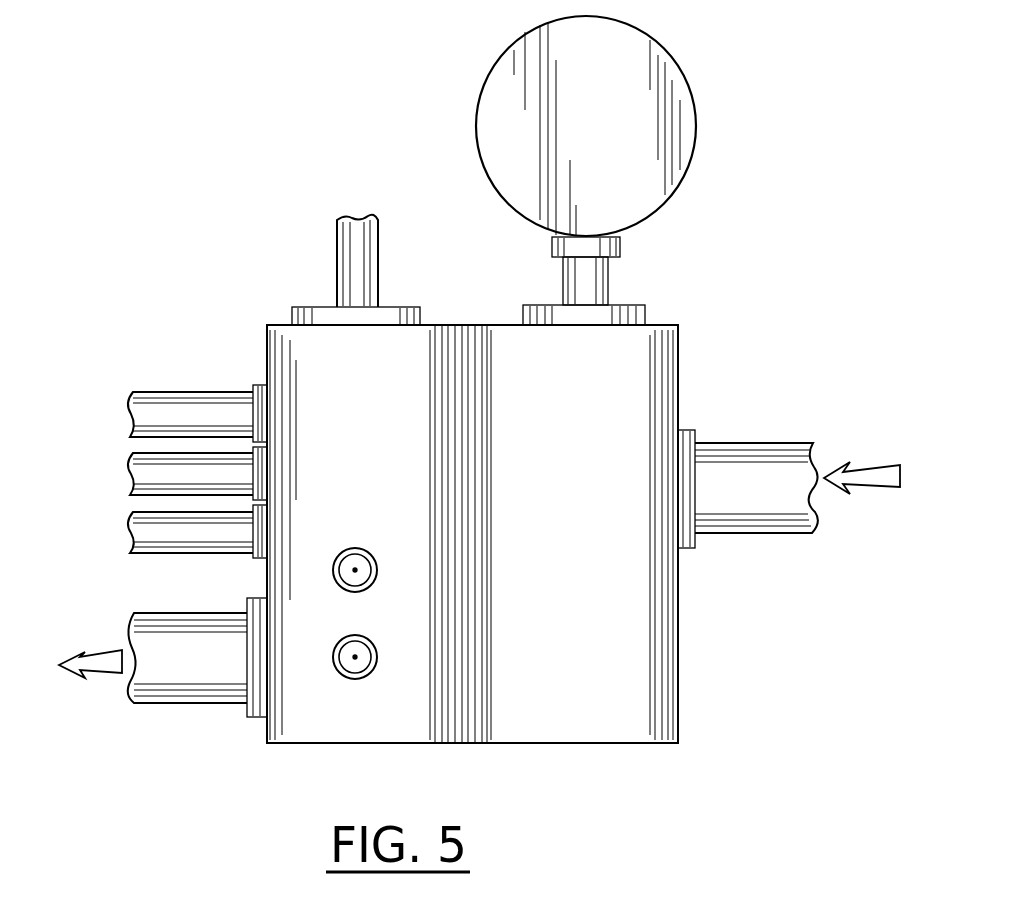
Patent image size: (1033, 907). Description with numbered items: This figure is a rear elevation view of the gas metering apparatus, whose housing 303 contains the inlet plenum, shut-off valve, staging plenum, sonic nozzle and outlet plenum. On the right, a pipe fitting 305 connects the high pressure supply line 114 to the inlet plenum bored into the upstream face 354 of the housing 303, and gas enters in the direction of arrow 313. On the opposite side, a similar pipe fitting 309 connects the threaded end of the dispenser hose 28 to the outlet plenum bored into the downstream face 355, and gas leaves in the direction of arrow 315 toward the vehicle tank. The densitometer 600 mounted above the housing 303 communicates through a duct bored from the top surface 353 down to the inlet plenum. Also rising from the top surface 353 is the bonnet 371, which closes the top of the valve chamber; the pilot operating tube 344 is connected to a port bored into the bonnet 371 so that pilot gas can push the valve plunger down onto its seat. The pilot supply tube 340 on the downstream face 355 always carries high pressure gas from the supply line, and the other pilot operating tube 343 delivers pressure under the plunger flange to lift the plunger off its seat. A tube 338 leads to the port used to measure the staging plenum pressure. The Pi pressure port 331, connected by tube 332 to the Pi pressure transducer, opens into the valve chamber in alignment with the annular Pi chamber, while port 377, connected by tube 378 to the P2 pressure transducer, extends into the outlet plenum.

The housing 303 is at (672, 326).
The pipe fitting 305 is at (686, 430).
The high pressure supply line 114 is at (775, 443).
The arrow 313 is at (897, 476).
The densitometer 600 is at (690, 176).
The pilot operating tube 344 is at (337, 252).
The bonnet 371 is at (322, 307).
The top surface 353 is at (445, 325).
The upstream face 354 is at (680, 605).
The downstream face 355 is at (266, 347).
The pilot operating tube 343 is at (165, 392).
The pilot supply tube 340 is at (162, 453).
The tube 338 is at (165, 512).
The Pi pressure port 331 is at (366, 556).
The tube 332 is at (366, 585).
The port 377 is at (366, 643).
The tube 378 is at (366, 671).
The dispenser hose 28 is at (222, 705).
The pipe fitting 309 is at (255, 718).
The arrow 315 is at (106, 680).